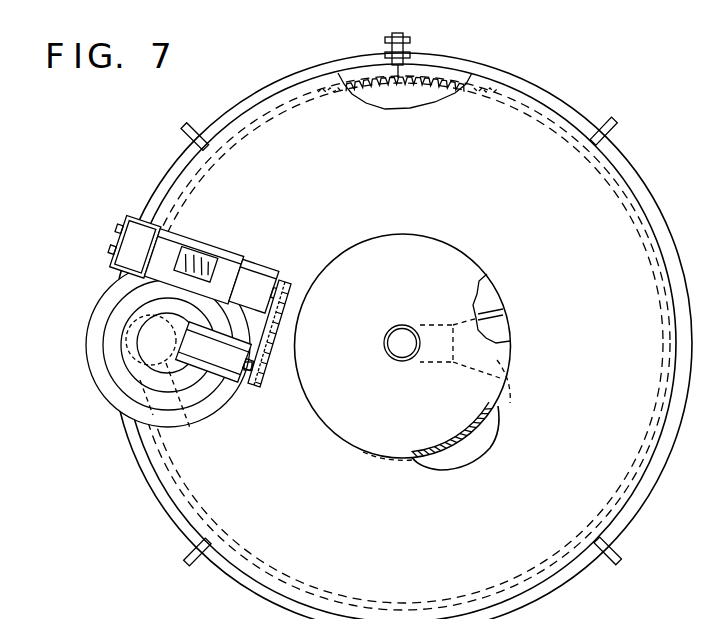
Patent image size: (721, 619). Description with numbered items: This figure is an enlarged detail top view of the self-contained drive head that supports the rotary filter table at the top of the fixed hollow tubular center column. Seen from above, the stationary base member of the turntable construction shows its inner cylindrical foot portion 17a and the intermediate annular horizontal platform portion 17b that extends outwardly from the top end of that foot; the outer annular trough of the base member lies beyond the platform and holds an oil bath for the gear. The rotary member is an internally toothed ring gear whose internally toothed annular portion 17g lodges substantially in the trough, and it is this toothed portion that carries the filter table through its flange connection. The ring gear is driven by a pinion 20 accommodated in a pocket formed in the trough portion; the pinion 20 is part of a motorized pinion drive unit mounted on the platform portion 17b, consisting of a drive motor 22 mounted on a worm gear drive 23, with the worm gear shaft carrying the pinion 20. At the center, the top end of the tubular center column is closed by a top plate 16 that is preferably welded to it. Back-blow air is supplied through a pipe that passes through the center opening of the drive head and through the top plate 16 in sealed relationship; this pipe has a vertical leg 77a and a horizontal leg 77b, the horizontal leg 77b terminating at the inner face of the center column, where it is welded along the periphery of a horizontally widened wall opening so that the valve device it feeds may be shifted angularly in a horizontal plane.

The top plate 16 is at (410, 411).
The inner cylindrical foot portion 17a is at (474, 414).
The intermediate annular horizontal platform portion 17b is at (435, 104).
The internally toothed annular portion 17g is at (424, 90).
The pinion 20 is at (172, 403).
The drive motor 22 is at (219, 355).
The worm gear drive 23 is at (105, 244).
The vertical leg 77a is at (385, 341).
The horizontal leg 77b is at (549, 303).